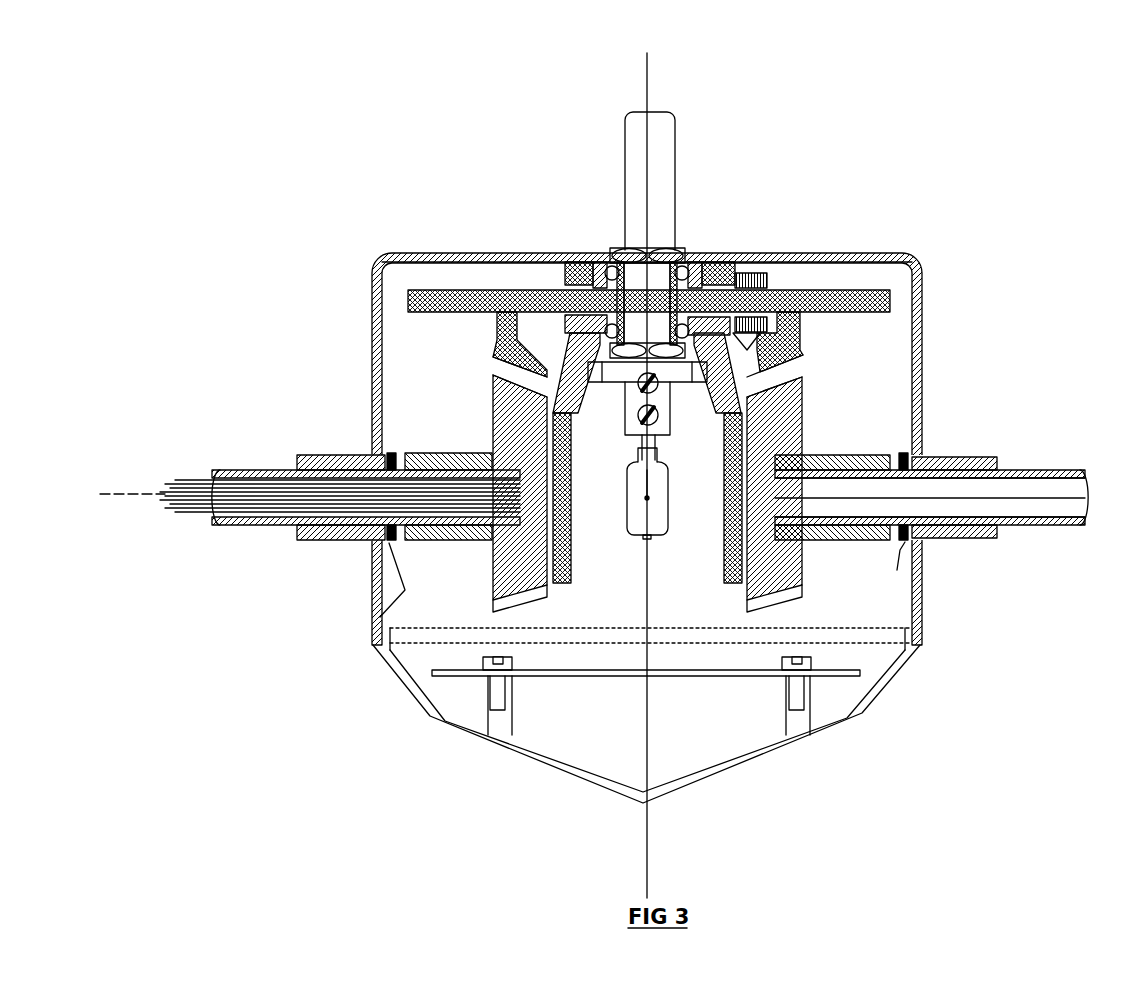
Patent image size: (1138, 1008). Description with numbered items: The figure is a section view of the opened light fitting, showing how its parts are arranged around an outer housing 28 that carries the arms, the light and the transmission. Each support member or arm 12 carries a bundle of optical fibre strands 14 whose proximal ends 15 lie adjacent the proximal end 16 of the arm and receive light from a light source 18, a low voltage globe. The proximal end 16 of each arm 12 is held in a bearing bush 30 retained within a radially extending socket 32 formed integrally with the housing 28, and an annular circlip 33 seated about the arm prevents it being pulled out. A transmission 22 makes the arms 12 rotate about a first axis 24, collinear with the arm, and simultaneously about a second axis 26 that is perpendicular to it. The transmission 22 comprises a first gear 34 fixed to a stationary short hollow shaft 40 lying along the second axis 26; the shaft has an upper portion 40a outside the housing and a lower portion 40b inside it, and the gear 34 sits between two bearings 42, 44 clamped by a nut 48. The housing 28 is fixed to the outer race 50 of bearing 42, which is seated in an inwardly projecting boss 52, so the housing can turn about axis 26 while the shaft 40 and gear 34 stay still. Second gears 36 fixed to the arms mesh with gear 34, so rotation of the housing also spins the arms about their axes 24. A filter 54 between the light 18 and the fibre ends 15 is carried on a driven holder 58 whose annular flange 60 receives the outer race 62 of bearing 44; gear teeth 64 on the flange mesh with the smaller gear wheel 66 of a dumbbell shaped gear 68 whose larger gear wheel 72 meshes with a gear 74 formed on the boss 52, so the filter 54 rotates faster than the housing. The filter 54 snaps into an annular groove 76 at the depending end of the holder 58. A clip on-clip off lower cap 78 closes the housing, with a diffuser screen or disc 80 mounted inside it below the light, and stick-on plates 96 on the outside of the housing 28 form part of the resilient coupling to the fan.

The support member or arm 12 is at (280, 527).
The optical fibre strand 14 is at (192, 482).
The proximal end of strand 15 is at (460, 540).
The proximal end of arm 16 is at (378, 636).
The light source 18 is at (632, 540).
The transmission 22 is at (815, 336).
The first axis 24 is at (142, 492).
The second axis 26 is at (650, 869).
The outer housing 28 is at (925, 332).
The bearing bush 30 is at (342, 537).
The radially extending socket 32 is at (322, 452).
The annular circlip 33 is at (380, 617).
The first gear 34 is at (388, 254).
The second gear 36 is at (493, 540).
The stationary short hollow shaft 40 is at (665, 163).
The upper portion of shaft 40a is at (665, 122).
The lower portion of shaft 40b is at (672, 248).
The bearing 42 is at (606, 250).
The bearing 44 is at (560, 324).
The nut 48 is at (648, 247).
The outer race of bearing 50 is at (598, 250).
The inwardly projecting boss 52 is at (590, 257).
The filter 54 is at (725, 586).
The driven holder 58 is at (558, 387).
The annular flange 60 is at (407, 290).
The outer race of bearing 62 is at (560, 347).
The gear teeth 64 is at (512, 313).
The gear wheel 66 is at (771, 250).
The dumbbell shaped gear 68 is at (754, 251).
The gear wheel 72 is at (748, 251).
The gear 74 is at (565, 272).
The annular groove 76 is at (800, 400).
The lower cap 78 is at (893, 696).
The diffuser screen or disc 80 is at (646, 702).
The stick-on plate 96 is at (645, 247).